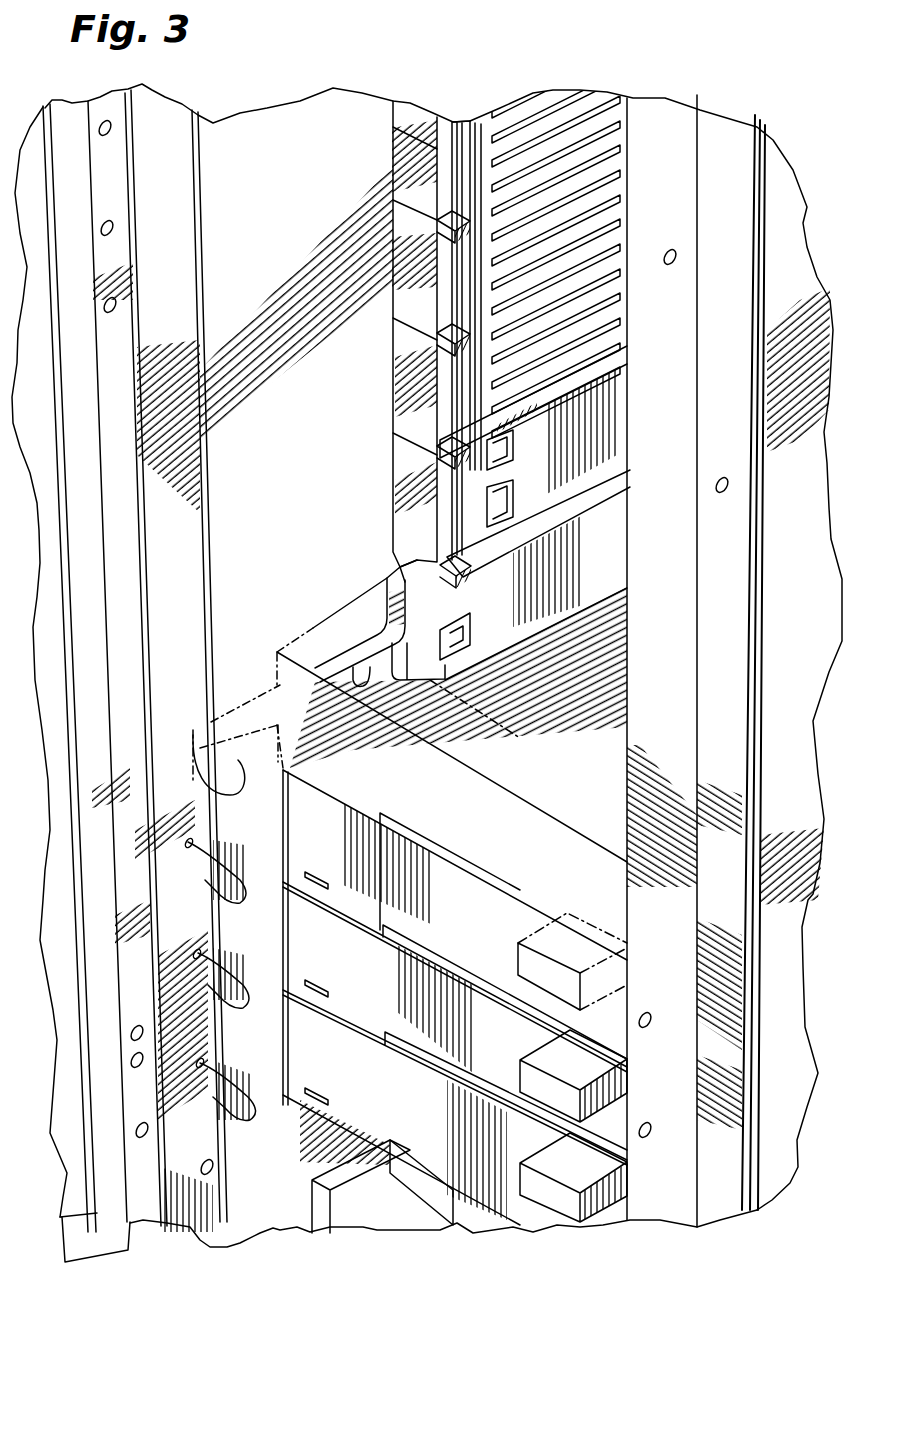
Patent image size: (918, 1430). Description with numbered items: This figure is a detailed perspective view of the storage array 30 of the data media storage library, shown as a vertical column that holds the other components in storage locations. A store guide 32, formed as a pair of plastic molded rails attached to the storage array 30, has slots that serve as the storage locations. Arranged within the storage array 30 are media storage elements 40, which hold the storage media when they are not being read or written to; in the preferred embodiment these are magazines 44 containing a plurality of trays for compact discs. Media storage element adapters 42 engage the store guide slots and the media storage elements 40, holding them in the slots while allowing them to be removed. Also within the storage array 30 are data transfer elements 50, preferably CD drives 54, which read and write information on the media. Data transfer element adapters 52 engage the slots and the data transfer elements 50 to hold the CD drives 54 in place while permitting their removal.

The storage array 30 is at (248, 152).
The store guide 32 is at (193, 1140).
The media storage element 40 is at (522, 407).
The media storage element adapter 42 is at (440, 308).
The magazine 44 is at (587, 213).
The data transfer element 50 is at (632, 1108).
The data transfer element adapter 52 is at (240, 1033).
The CD drive 54 is at (610, 1020).